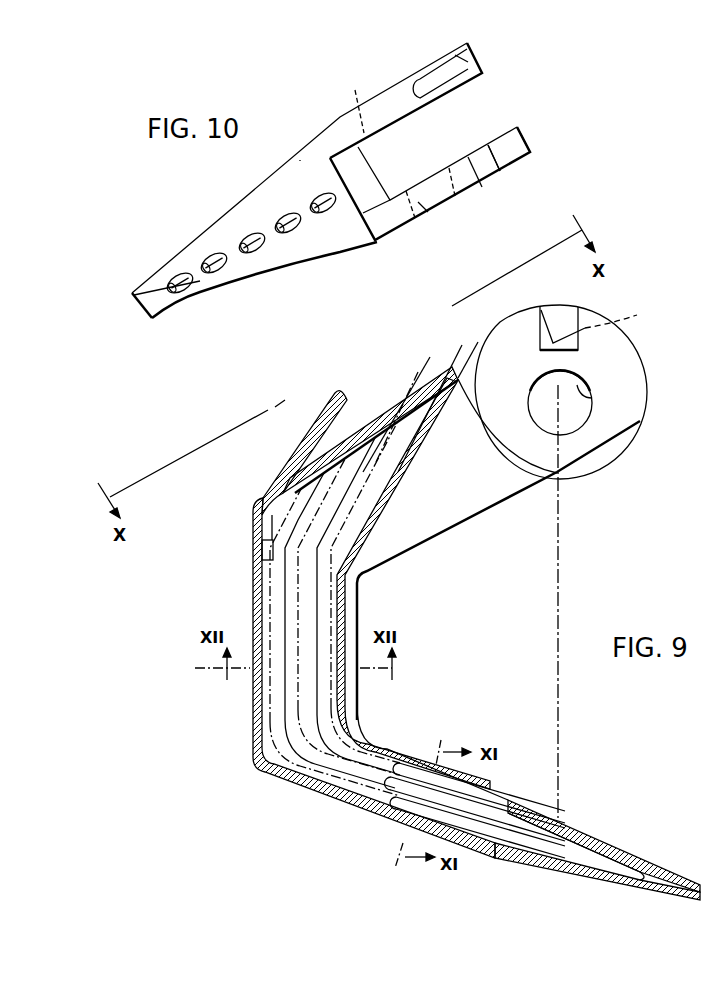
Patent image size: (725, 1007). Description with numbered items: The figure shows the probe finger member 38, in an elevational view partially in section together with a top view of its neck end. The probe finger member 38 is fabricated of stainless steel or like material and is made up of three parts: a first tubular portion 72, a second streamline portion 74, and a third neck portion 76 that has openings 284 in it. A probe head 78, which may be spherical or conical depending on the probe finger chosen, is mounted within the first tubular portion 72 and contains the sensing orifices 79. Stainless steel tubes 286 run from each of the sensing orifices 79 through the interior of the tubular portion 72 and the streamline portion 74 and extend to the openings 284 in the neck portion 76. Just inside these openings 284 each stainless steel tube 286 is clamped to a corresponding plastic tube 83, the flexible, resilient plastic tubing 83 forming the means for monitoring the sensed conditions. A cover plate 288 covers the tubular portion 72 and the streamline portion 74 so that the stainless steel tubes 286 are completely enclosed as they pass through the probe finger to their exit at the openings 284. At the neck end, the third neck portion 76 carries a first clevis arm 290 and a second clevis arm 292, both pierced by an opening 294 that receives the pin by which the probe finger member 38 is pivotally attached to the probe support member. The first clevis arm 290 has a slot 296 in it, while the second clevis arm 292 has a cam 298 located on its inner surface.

In FIG. 9, the probe finger member 38 is at (496, 648).
In FIG. 9, the first tubular portion 72 is at (310, 793).
In FIG. 10, the second streamline portion 74 is at (257, 198).
In FIG. 9, the second streamline portion 74 is at (262, 693).
In FIG. 10, the third neck portion 76 is at (446, 143).
In FIG. 9, the third neck portion 76 is at (497, 492).
In FIG. 9, the probe head 78 is at (657, 863).
In FIG. 9, the sensing orifices 79 is at (578, 838).
In FIG. 9, the plastic tubing 83 is at (275, 494).
In FIG. 10, the openings 284 is at (246, 236).
In FIG. 9, the openings 284 is at (350, 452).
In FIG. 9, the stainless steel tubes 286 is at (268, 546).
In FIG. 10, the cover plate 288 is at (290, 255).
In FIG. 10, the first clevis arm 290 is at (513, 147).
In FIG. 9, the first clevis arm 290 is at (623, 412).
In FIG. 10, the second clevis arm 292 is at (438, 58).
In FIG. 10, the opening 294 is at (428, 232).
In FIG. 9, the opening 294 is at (592, 397).
In FIG. 10, the slot 296 is at (492, 167).
In FIG. 9, the slot 296 is at (572, 306).
In FIG. 10, the cam 298 is at (467, 68).
In FIG. 9, the cam 298 is at (632, 317).